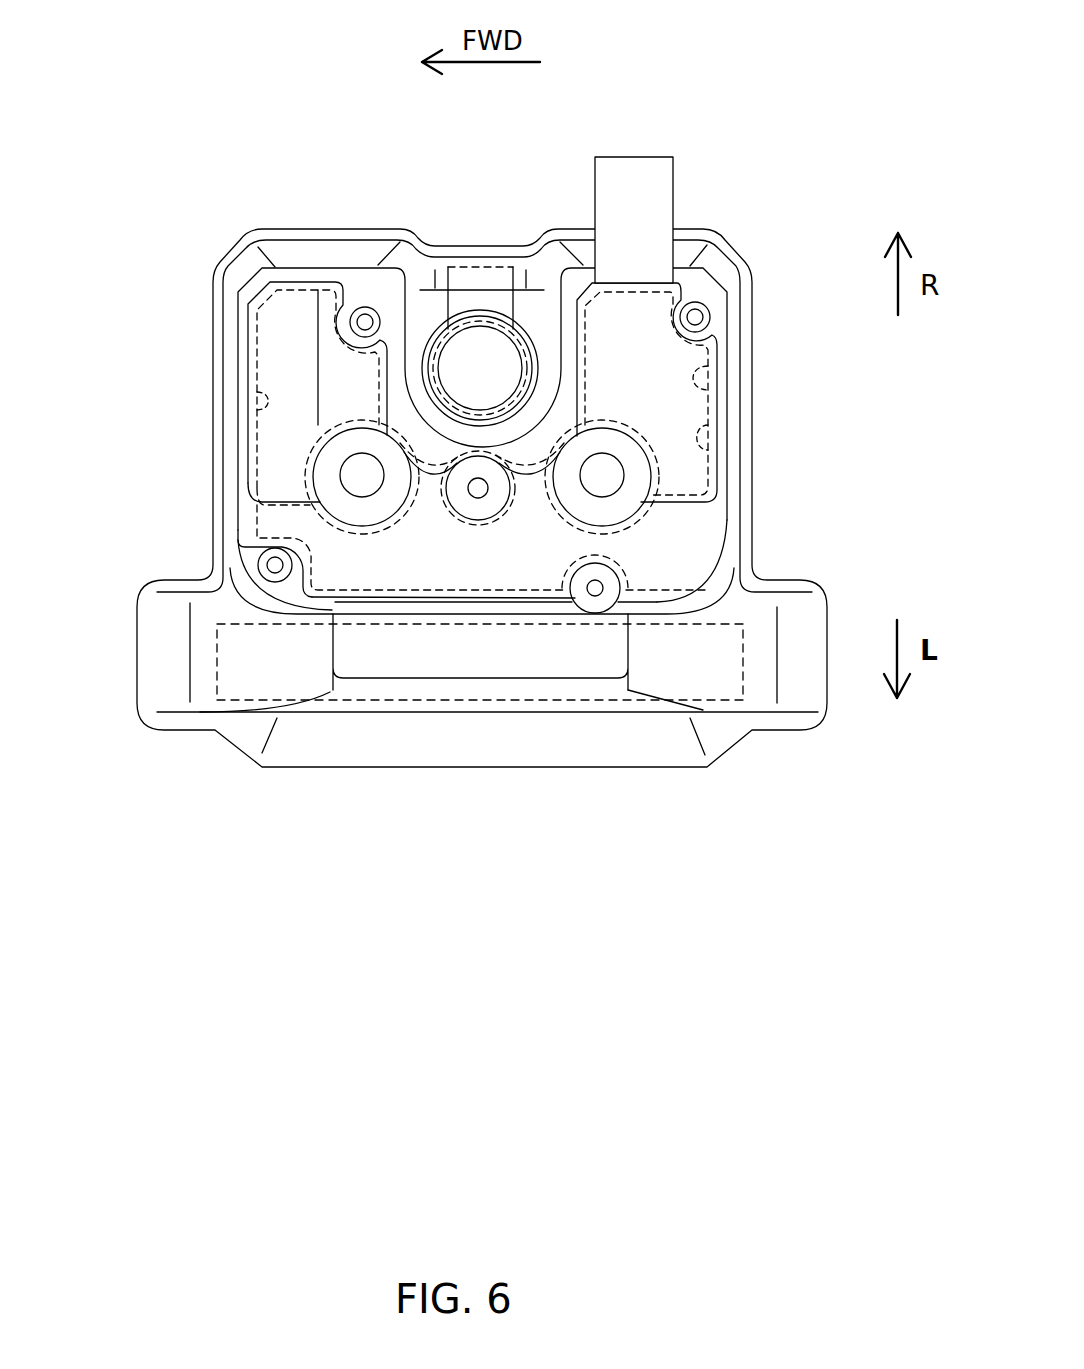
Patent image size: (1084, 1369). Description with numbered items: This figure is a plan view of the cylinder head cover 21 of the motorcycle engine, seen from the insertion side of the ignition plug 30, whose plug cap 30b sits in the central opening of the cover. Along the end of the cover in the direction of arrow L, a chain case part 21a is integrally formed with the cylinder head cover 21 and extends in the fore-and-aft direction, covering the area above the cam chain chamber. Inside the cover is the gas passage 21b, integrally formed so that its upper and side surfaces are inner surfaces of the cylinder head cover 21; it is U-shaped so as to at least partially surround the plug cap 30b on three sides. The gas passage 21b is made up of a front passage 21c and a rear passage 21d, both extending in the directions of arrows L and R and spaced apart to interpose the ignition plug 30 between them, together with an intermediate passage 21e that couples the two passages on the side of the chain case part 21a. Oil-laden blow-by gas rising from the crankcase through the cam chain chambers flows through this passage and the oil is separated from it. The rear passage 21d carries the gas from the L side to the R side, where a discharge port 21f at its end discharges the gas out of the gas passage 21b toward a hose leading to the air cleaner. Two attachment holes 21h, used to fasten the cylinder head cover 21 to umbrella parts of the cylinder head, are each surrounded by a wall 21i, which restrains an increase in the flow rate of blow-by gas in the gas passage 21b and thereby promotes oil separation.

The cylinder head cover 21 is at (247, 730).
The chain case part 21a is at (608, 700).
The gas passage 21b is at (690, 387).
The front passage 21c is at (263, 407).
The rear passage 21d is at (710, 450).
The intermediate passage 21e is at (433, 575).
The discharge port 21f is at (643, 200).
The attachment hole 21h is at (350, 476).
The wall 21i is at (358, 530).
The ignition plug 30 is at (458, 302).
The plug cap 30b is at (503, 364).